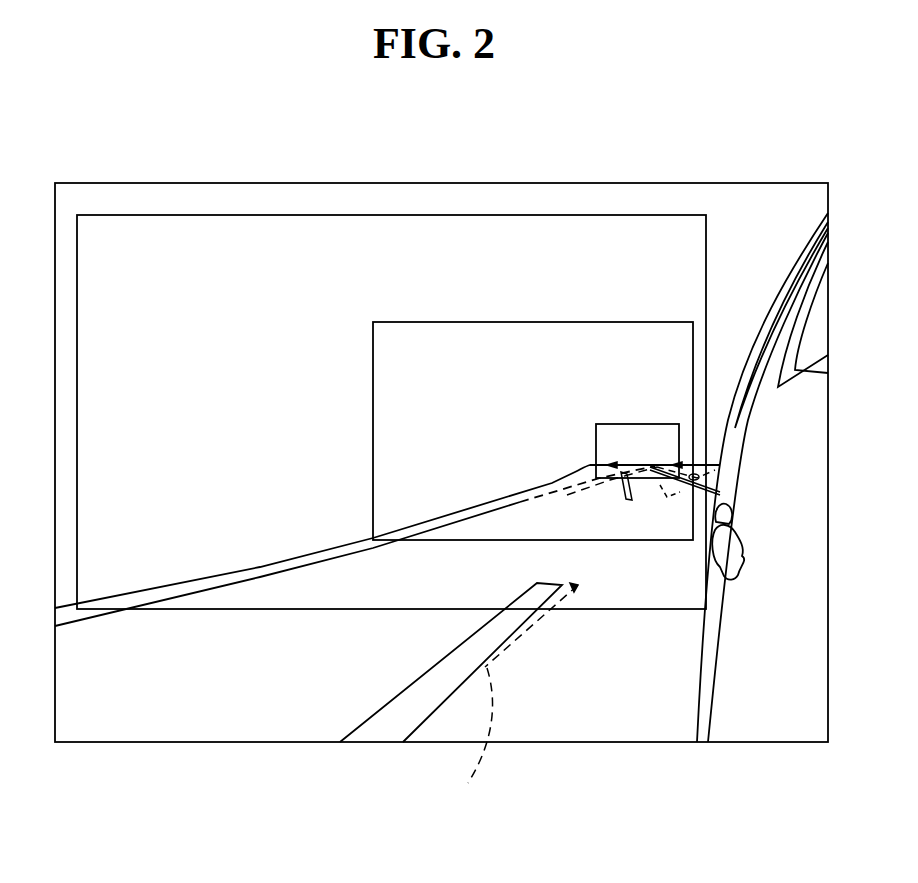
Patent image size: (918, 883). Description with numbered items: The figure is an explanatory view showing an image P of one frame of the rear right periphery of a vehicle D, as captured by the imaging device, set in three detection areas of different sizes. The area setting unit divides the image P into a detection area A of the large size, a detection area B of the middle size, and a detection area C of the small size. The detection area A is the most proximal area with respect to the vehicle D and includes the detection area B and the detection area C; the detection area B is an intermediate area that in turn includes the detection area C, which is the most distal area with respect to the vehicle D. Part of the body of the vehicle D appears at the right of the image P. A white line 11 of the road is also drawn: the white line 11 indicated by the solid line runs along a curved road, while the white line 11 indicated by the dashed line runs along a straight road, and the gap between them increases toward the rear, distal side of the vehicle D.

The image P is at (135, 183).
The detection area of the large size A is at (167, 215).
The detection area of the middle size B is at (404, 322).
The detection area of the small size C is at (627, 424).
The vehicle D is at (760, 735).
The white line 11 is at (571, 490).